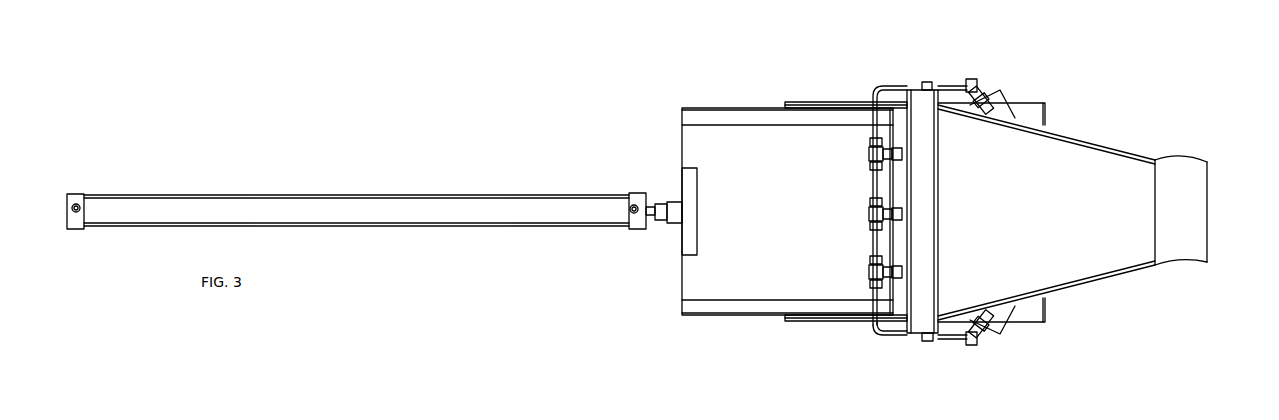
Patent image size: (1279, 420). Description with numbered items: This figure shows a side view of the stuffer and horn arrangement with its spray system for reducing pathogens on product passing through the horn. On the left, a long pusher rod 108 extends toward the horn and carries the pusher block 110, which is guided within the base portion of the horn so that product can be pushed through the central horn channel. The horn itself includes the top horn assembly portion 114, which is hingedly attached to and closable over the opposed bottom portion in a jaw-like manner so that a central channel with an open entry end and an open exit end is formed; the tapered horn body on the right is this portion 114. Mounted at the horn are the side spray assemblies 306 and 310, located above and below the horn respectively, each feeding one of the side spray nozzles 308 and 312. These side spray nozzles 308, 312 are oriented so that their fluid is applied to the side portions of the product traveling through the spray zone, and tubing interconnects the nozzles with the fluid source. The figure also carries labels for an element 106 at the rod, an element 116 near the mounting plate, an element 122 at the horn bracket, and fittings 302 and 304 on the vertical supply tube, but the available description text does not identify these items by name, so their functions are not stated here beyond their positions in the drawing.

The rod 106 is at (327, 205).
The pusher rod 108 is at (663, 203).
The pusher block 110 is at (687, 240).
The top horn assembly portion 114 is at (1107, 117).
The mounting plate 116 is at (900, 305).
The bracket 122 is at (1050, 307).
The fitting 302 is at (870, 148).
The fitting 304 is at (893, 282).
The side spray assembly 306 is at (1003, 90).
The side spray nozzle 308 is at (998, 88).
The side spray assembly 310 is at (995, 331).
The side spray nozzle 312 is at (983, 332).